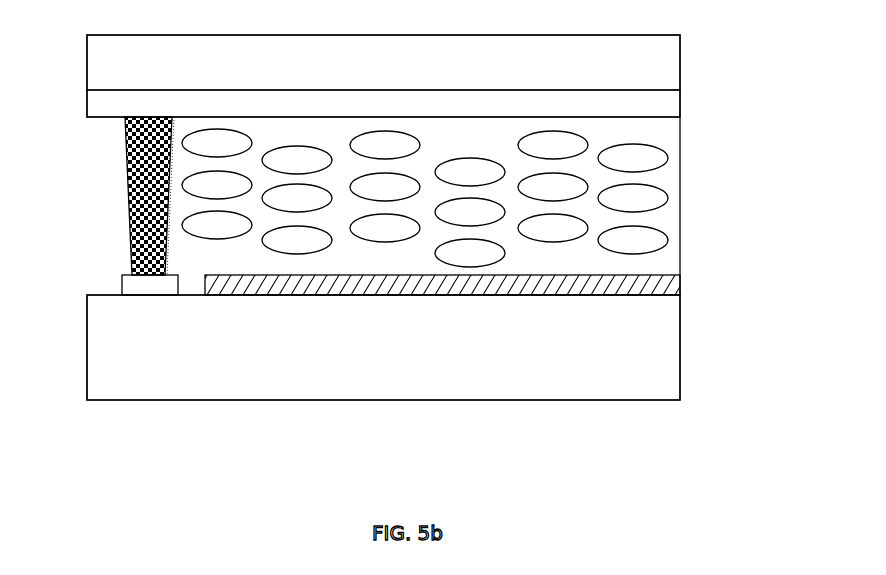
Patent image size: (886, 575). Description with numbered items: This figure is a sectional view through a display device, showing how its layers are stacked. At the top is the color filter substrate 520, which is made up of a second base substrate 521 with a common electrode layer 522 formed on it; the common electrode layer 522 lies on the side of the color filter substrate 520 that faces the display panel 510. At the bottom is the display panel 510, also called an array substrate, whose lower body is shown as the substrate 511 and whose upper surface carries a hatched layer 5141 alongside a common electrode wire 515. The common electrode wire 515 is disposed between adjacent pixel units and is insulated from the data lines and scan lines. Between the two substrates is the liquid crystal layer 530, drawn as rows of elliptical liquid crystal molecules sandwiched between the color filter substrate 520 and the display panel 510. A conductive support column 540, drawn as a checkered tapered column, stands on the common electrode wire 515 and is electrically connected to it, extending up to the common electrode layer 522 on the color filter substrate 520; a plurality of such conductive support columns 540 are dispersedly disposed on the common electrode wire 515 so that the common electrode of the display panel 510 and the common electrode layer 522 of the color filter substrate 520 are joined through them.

The display panel 510 is at (80, 275).
The first substrate 511 is at (665, 345).
The common electrode wire 515 is at (150, 285).
The pixel electrode layer 5141 is at (555, 283).
The color filter substrate 520 is at (80, 32).
The second base substrate 521 is at (660, 62).
The common electrode layer 522 is at (672, 100).
The liquid crystal layer 530 is at (650, 243).
The conductive support columns 540 is at (140, 183).